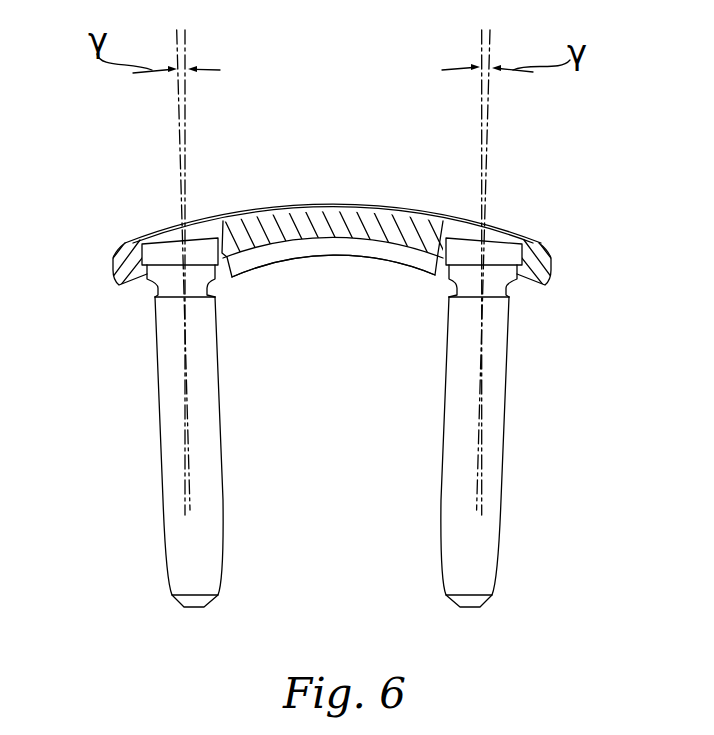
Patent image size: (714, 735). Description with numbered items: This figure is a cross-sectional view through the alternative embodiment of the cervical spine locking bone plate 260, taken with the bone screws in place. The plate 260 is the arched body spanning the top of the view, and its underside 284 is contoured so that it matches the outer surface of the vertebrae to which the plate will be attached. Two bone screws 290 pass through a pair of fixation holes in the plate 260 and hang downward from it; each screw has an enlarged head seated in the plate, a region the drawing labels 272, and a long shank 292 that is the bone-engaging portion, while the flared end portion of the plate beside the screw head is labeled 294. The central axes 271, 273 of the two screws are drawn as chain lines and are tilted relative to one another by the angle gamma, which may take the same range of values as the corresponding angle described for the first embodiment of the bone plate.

The bone plate 260 is at (371, 202).
The pin axis 271 is at (178, 127).
The pin axis 273 is at (480, 45).
The head of pin 272 is at (213, 228).
The underside 284 is at (358, 260).
The pins 290 is at (297, 452).
The pin shaft 292 is at (155, 426).
The end flange of bridge 294 is at (538, 286).